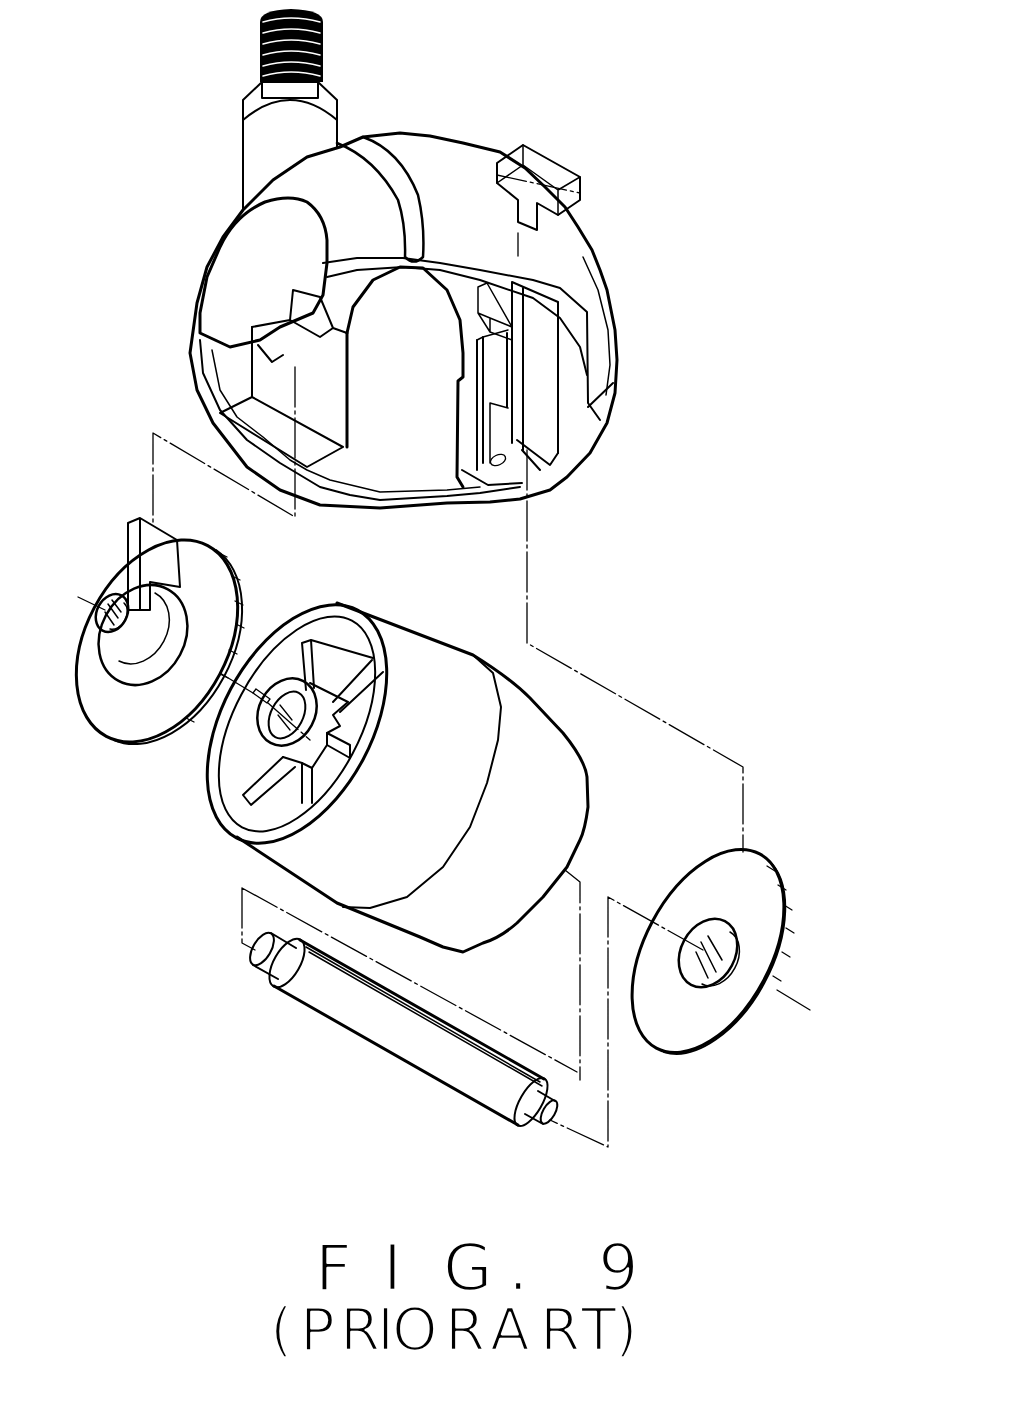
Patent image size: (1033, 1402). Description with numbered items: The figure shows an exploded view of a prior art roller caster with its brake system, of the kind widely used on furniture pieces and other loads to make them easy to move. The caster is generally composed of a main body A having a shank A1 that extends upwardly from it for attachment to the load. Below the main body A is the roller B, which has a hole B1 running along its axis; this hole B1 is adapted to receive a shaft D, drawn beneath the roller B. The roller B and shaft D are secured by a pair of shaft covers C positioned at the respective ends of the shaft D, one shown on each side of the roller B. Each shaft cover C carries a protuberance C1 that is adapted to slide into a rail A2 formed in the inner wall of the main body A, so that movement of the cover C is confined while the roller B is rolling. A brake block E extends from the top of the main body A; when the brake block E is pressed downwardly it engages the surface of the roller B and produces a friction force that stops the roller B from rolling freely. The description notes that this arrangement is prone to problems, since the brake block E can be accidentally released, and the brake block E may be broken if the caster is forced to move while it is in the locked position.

The main body A is at (575, 276).
The shank A1 is at (318, 48).
The rail A2 is at (528, 475).
The roller B is at (411, 763).
The hole B1 is at (262, 800).
The shaft cover C is at (434, 819).
The protuberance C1 is at (97, 593).
The shaft D is at (413, 1050).
The brake block E is at (563, 173).